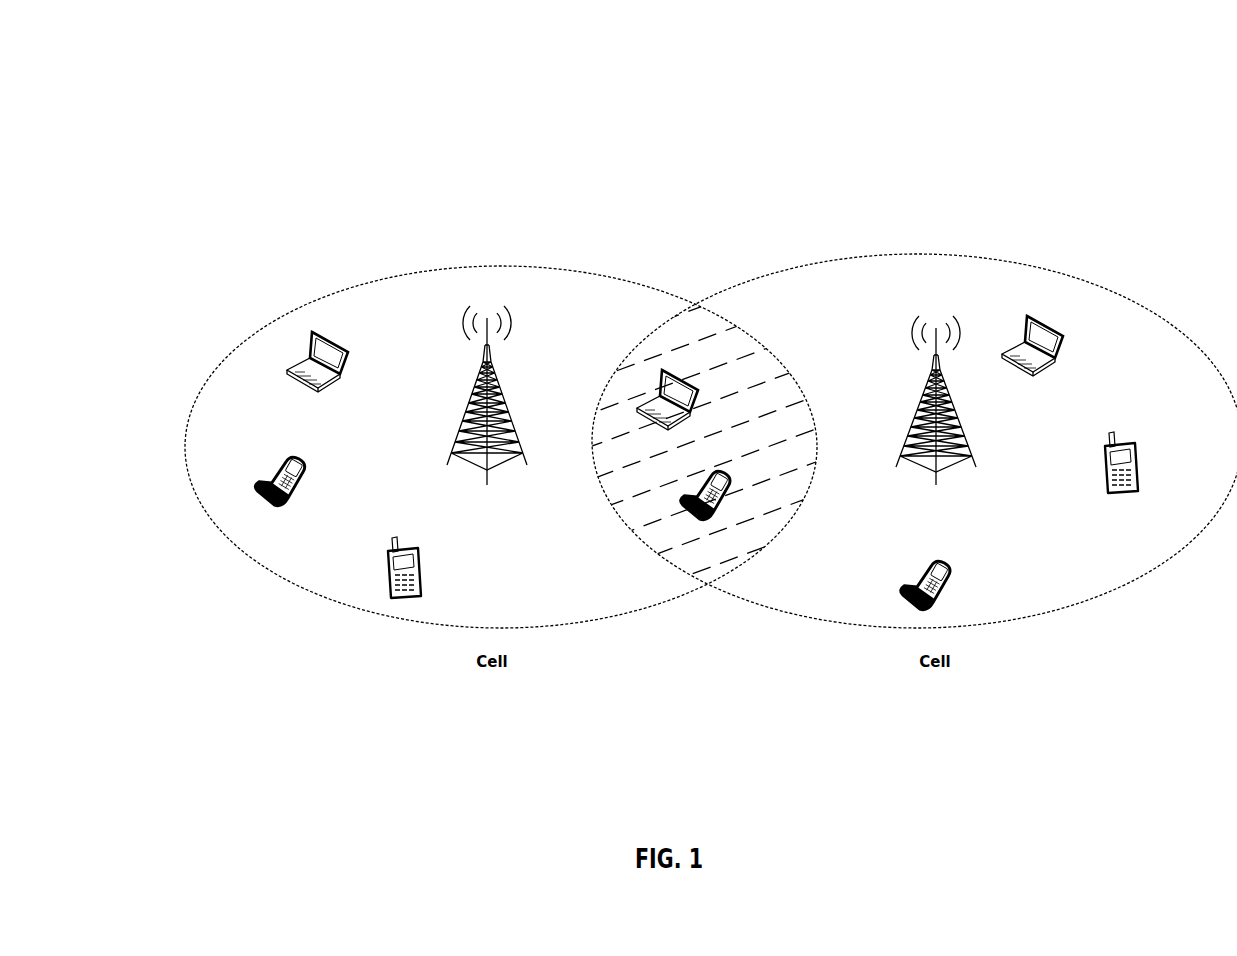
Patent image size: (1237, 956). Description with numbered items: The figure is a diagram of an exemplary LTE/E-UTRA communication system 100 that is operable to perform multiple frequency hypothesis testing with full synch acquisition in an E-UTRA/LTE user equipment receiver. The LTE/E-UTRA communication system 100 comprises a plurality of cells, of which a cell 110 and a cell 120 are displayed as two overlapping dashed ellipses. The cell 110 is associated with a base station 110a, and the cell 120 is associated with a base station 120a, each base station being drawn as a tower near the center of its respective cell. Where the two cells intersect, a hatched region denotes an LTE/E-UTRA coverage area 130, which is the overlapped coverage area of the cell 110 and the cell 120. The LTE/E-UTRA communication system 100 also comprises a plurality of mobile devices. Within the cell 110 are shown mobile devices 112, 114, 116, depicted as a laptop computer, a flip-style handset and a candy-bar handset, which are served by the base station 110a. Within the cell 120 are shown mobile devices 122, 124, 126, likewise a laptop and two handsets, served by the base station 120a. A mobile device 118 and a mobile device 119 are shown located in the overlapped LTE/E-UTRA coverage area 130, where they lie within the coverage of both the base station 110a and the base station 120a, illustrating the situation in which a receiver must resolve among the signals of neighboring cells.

The LTE/E-UTRA communication system 100 is at (416, 73).
The cell 110 is at (597, 277).
The base station 110a is at (513, 323).
The mobile device 112 is at (348, 350).
The mobile device 114 is at (305, 473).
The mobile device 116 is at (421, 577).
The mobile device 118 is at (727, 500).
The mobile device 119 is at (697, 413).
The cell 120 is at (983, 257).
The base station 120a is at (968, 340).
The mobile device 122 is at (1063, 336).
The mobile device 124 is at (1138, 473).
The mobile device 126 is at (953, 575).
The LTE/E-UTRA coverage area 130 is at (690, 310).